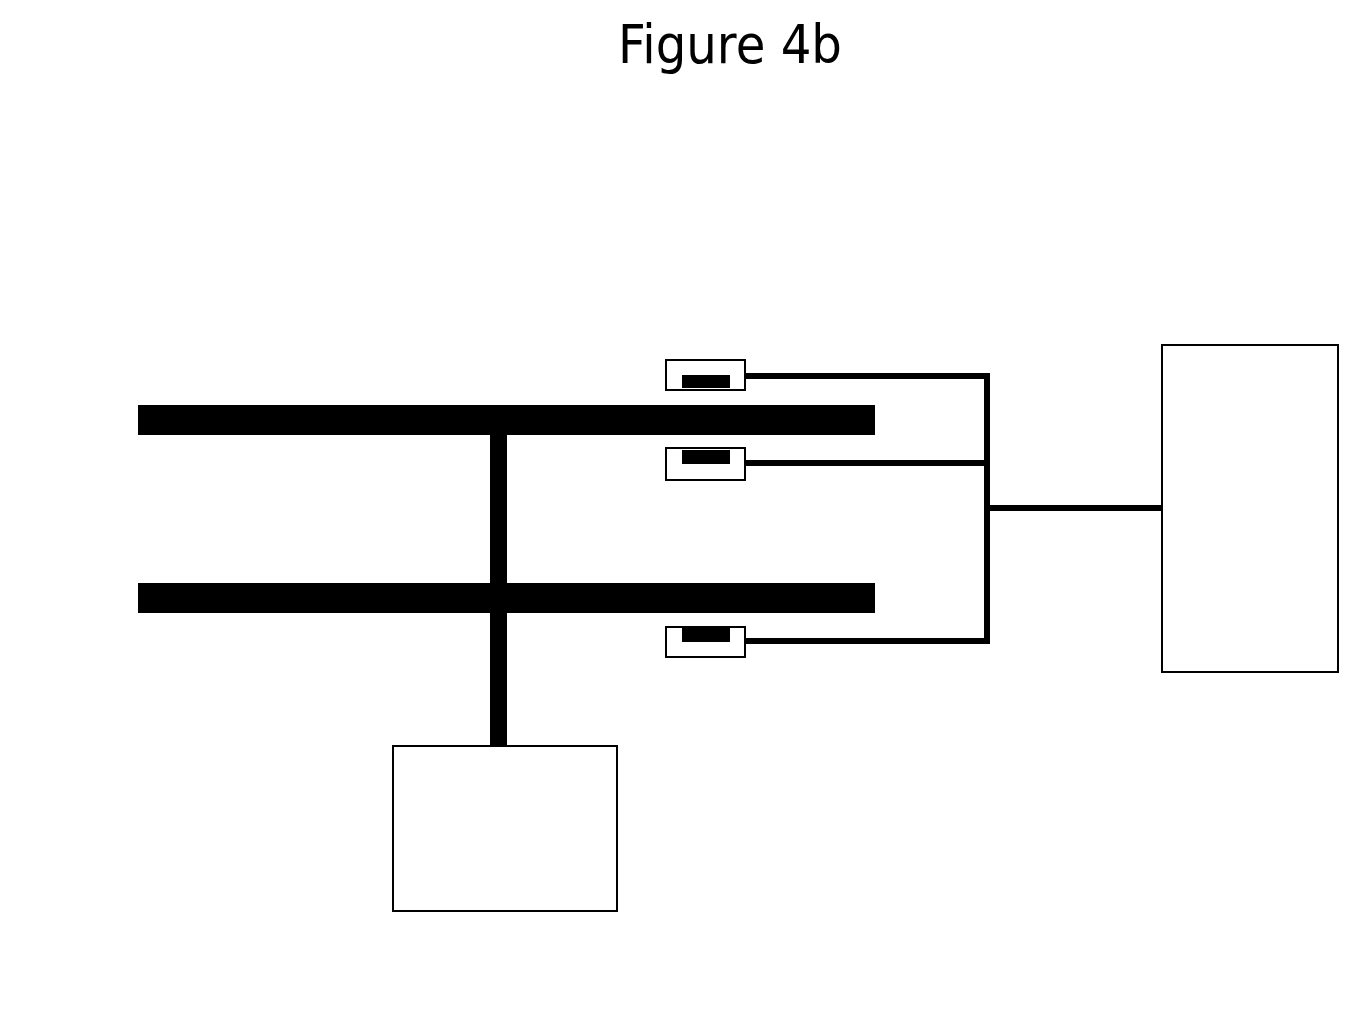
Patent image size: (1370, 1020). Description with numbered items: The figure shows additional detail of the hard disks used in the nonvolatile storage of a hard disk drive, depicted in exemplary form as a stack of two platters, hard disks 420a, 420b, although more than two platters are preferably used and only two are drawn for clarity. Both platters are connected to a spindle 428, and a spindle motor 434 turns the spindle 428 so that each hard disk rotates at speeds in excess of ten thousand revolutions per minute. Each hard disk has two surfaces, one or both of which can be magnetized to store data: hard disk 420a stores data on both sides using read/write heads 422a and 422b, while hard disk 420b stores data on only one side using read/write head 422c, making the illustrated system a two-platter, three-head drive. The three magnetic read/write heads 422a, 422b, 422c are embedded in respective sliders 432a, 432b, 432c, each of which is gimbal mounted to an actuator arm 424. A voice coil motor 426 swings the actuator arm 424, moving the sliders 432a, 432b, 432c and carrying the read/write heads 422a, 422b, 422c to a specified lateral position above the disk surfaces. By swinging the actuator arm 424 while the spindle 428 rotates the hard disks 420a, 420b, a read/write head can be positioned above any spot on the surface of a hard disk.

The hard disk 420a is at (187, 405).
The hard disk 420b is at (198, 583).
The read/write head 422a is at (680, 385).
The read/write head 422b is at (697, 457).
The read/write head 422c is at (697, 635).
The actuator arm 424 is at (978, 645).
The Voice Coil Motor (VCM) 426 is at (1277, 549).
The spindle 428 is at (490, 537).
The slider 432a is at (730, 360).
The slider 432b is at (730, 480).
The slider 432c is at (730, 657).
The spindle motor 434 is at (482, 879).